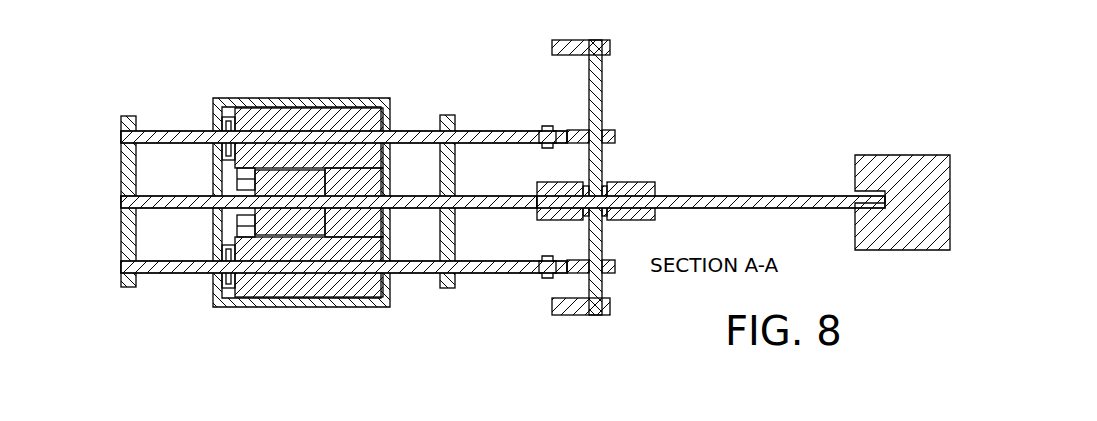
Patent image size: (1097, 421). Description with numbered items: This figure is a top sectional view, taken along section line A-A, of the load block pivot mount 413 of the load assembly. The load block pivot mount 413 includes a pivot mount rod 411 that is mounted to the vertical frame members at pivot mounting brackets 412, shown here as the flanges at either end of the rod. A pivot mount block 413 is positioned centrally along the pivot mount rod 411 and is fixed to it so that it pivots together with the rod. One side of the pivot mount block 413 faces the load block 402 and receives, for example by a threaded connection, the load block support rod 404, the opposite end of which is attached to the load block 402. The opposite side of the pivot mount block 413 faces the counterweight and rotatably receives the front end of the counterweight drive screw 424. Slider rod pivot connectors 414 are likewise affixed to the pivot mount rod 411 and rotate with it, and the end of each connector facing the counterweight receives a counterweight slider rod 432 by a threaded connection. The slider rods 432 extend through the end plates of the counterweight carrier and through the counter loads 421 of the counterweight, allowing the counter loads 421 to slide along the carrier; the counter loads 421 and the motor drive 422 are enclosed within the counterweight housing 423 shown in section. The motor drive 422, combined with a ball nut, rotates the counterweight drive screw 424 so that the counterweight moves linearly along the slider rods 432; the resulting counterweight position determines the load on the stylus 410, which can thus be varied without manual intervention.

The load block 402 is at (920, 162).
The load block support rod 404 is at (773, 200).
The stylus 410 is at (611, 200).
The pivot mount rod 411 is at (600, 168).
The pivot mounting bracket 412 is at (557, 45).
The load block pivot mount 413 is at (655, 185).
The slider rod pivot connector 414 is at (612, 137).
The counter load 421 is at (328, 117).
The motor drive 422 is at (288, 233).
The housing 423 is at (378, 280).
The counterweight drive screw 424 is at (150, 200).
The counterweight slider rod 432 is at (167, 140).